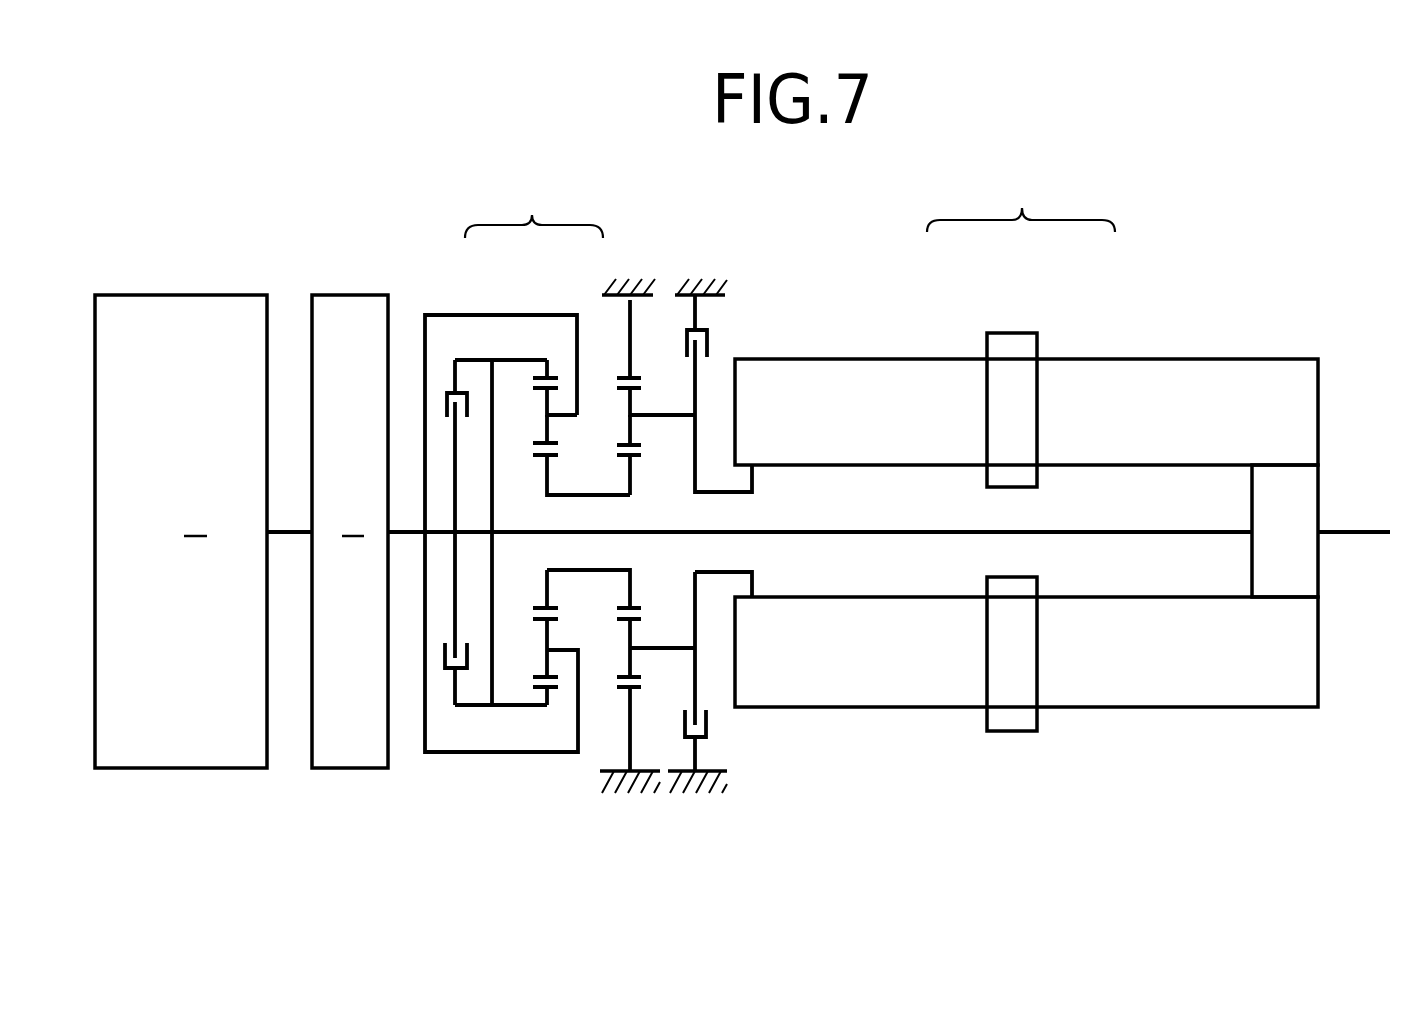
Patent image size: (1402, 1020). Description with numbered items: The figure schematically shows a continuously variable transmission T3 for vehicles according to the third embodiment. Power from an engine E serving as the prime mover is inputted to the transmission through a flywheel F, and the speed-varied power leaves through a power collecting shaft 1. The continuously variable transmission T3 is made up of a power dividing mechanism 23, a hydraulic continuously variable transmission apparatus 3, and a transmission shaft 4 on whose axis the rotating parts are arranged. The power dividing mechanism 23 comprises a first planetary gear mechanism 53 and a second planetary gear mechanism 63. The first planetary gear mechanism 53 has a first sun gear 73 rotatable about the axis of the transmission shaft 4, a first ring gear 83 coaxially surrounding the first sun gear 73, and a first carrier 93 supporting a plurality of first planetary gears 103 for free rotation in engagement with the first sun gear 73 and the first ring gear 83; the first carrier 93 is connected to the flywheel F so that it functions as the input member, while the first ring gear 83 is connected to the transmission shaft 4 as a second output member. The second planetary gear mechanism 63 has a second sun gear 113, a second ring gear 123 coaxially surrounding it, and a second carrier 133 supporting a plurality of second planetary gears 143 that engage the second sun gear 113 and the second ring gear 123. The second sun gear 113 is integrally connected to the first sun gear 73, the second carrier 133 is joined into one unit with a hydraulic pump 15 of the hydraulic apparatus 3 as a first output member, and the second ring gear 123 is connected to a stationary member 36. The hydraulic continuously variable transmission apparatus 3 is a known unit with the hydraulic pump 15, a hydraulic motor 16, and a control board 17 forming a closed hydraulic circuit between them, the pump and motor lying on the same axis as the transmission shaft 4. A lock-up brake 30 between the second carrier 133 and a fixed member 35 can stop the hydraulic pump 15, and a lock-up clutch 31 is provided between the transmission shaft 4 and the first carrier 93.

The engine E is at (181, 531).
The flywheel F is at (350, 531).
The power collecting shaft 1 is at (1340, 528).
The hydraulic continuously variable transmission apparatus 3 is at (1021, 198).
The transmission shaft 4 is at (1100, 536).
The hydraulic pump 15 is at (916, 354).
The hydraulic motor 16 is at (1143, 354).
The control board 17 is at (1015, 342).
The power dividing mechanism 23 is at (534, 205).
The lock-up brake 30 is at (710, 342).
The lock-up clutch 31 is at (443, 668).
The fixed member 35 is at (702, 283).
The stationary member 36 is at (627, 278).
The first planetary gear mechanism 53 is at (515, 311).
The second planetary gear mechanism 63 is at (612, 362).
The first sun gear 73 is at (545, 468).
The first ring gear 83 is at (503, 360).
The first carrier 93 is at (440, 313).
The first planetary gears 103 is at (548, 427).
The second sun gear 113 is at (630, 470).
The second ring gear 123 is at (635, 335).
The second carrier 133 is at (697, 427).
The second planetary gears 143 is at (632, 433).
The continuously variable transmission T3 is at (744, 746).